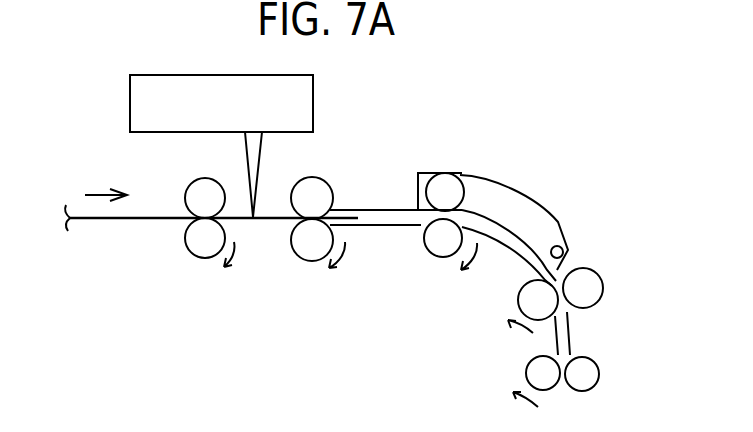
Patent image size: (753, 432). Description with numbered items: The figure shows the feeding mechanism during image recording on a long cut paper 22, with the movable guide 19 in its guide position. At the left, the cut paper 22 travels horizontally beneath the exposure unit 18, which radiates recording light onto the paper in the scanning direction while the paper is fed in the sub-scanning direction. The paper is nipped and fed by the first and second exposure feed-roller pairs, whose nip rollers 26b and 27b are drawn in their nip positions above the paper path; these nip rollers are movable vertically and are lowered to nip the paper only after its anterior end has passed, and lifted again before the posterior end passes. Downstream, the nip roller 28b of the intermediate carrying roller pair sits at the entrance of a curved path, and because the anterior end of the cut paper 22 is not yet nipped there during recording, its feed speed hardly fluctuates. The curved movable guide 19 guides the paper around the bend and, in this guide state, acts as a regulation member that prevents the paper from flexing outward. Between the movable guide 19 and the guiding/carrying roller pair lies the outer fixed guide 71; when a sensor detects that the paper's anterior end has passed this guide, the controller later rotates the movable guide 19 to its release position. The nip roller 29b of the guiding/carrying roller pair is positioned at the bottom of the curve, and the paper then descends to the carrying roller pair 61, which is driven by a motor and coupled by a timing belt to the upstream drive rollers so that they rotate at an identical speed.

The exposure unit 18 is at (135, 117).
The cut paper 22 is at (273, 219).
The nip roller 26b is at (195, 195).
The nip roller 27b is at (320, 192).
The nip roller 28b is at (443, 182).
The movable guide 19 is at (523, 210).
The outer fixed guide 71 is at (570, 263).
The nip roller 29b is at (597, 286).
The carrying roller pair 61 is at (535, 372).